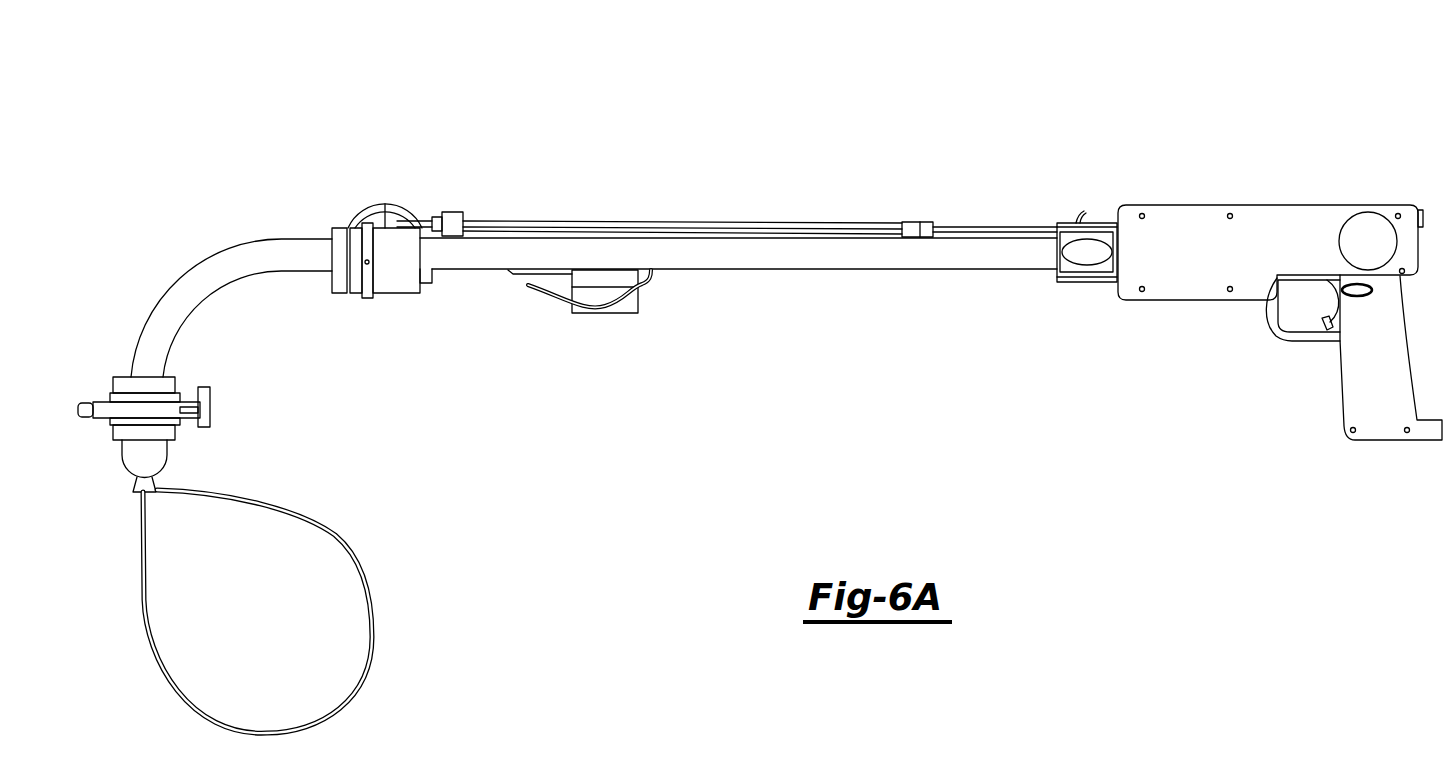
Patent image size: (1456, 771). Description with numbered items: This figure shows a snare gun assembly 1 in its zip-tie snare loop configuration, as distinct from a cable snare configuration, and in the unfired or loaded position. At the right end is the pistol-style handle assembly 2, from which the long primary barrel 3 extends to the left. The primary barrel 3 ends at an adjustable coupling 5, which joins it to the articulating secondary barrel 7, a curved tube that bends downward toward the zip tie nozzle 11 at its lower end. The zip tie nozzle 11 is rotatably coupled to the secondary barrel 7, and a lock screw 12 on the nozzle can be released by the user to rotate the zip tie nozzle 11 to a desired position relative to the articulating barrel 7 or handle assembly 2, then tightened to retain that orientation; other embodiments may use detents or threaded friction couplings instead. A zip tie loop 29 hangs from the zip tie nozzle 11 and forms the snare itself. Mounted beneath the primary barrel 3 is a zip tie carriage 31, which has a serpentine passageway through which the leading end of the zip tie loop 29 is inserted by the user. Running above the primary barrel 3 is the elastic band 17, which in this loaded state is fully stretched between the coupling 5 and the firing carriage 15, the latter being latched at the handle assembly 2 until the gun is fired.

The snare gun assembly 1 is at (1315, 74).
The handle assembly 2 is at (1265, 217).
The primary barrel 3 is at (890, 270).
The adjustable coupling 5 is at (400, 298).
The articulating secondary barrel 7 is at (246, 240).
The zip tie nozzle 11 is at (120, 377).
The lock screw 12 is at (215, 392).
The firing carriage 15 is at (1086, 283).
The elastic band 17 is at (760, 229).
The zip tie loop 29 is at (373, 638).
The zip tie carriage 31 is at (612, 314).